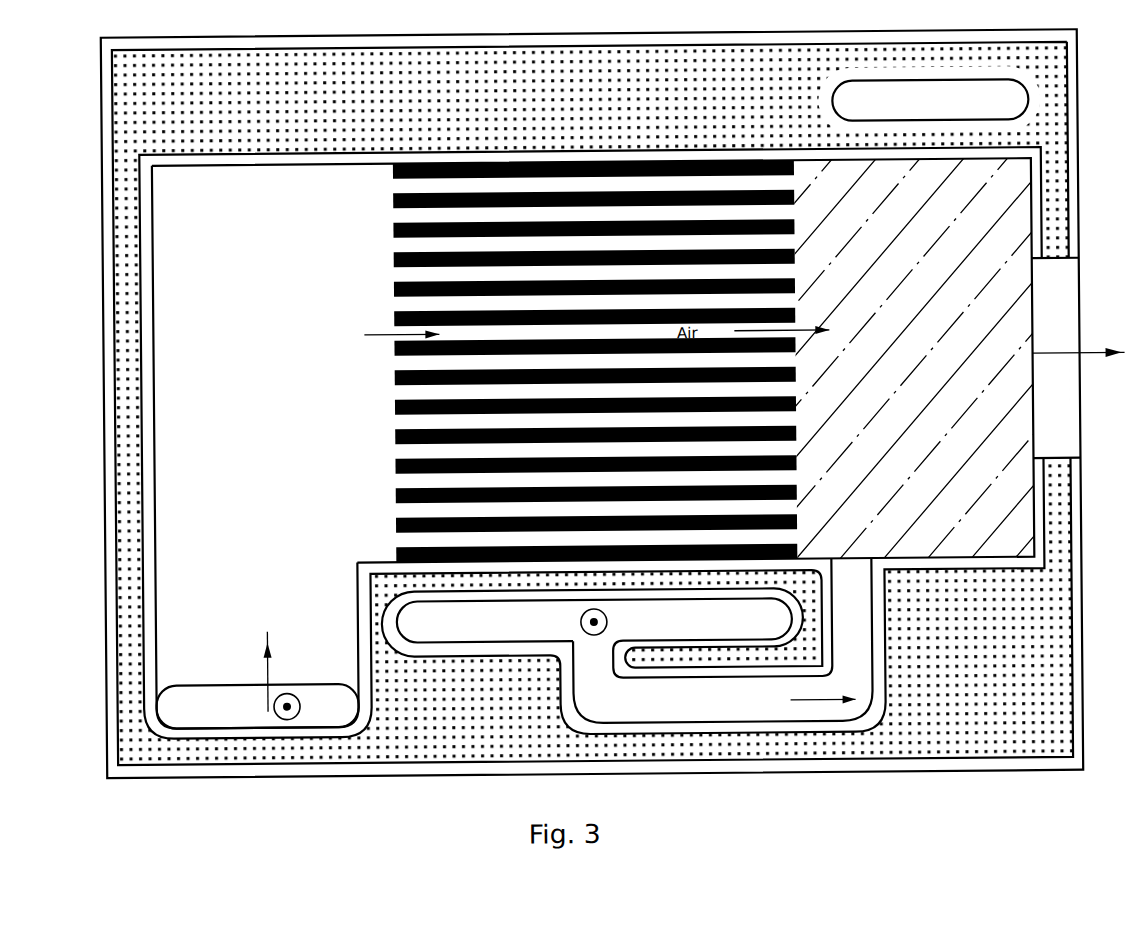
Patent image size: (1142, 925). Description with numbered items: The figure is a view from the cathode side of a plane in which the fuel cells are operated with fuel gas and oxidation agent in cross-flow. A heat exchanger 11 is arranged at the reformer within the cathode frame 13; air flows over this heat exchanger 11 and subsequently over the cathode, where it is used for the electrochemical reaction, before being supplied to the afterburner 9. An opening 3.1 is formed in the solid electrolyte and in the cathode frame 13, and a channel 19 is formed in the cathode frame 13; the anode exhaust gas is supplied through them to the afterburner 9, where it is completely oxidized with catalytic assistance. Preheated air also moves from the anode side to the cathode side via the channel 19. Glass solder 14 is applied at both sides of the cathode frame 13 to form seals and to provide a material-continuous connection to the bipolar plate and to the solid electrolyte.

The glass solder 14 is at (133, 374).
The cathode frame 13 is at (987, 766).
The heat exchanger 11 is at (263, 449).
The afterburner 9 is at (944, 296).
The opening 3.1 is at (441, 622).
The channel 19 is at (190, 704).